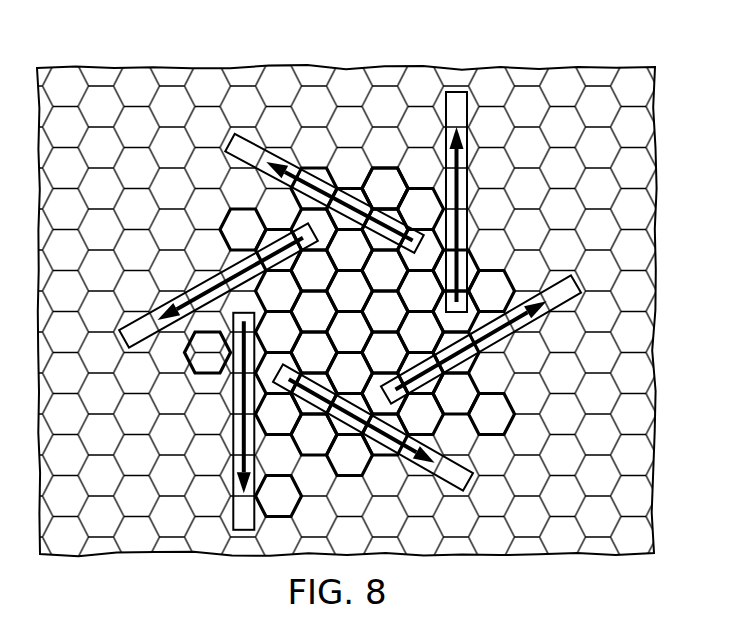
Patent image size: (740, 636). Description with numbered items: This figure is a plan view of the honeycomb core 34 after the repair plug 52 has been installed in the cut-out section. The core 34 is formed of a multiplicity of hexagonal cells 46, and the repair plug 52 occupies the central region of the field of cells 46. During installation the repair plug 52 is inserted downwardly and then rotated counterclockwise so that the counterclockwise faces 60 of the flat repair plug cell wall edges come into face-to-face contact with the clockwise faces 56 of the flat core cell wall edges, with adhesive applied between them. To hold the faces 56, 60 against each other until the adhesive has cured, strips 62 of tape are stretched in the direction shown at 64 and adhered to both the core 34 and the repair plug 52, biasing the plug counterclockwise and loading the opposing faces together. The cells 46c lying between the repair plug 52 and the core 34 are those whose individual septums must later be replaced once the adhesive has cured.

The honeycomb core 34 is at (528, 68).
The cells 46 is at (104, 526).
The cells lying between the repair plug and the core 46c is at (386, 176).
The repair plug 52 is at (336, 325).
The clockwise faces 56 is at (204, 360).
The counterclockwise faces 60 is at (500, 259).
The strips of tape 62 is at (248, 134).
The stretching direction 64 is at (298, 173).